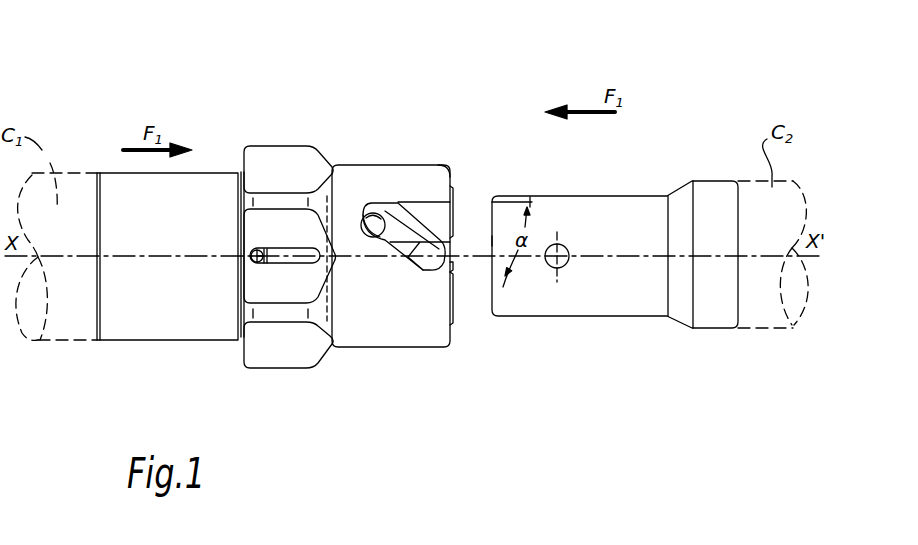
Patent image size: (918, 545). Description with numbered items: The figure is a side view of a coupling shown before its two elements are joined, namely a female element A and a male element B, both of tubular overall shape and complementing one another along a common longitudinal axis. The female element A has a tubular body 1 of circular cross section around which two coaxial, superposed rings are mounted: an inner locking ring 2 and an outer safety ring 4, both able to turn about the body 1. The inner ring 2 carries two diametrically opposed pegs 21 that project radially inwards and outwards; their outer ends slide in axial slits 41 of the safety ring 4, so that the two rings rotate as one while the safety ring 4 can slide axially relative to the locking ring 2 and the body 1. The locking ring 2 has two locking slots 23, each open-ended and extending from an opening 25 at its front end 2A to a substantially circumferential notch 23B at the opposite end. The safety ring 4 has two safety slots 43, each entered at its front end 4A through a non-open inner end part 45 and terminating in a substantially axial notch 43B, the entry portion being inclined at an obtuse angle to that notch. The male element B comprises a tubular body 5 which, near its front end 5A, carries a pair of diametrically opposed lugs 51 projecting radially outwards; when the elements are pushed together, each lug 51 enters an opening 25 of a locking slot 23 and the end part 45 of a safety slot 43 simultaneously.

The body 1 is at (144, 320).
The inner locking ring 2 is at (398, 215).
The front end of the locking ring 2A is at (462, 315).
The outer safety ring 4 is at (374, 353).
The front end of the safety ring 4A is at (456, 174).
The body 5 is at (596, 296).
The front end of the male body 5A is at (440, 233).
The peg 21 is at (251, 251).
The locking slot 23 is at (418, 222).
The circumferential notch 23B is at (364, 204).
The opening 25 is at (459, 239).
The axial slit 41 is at (298, 247).
The safety slot 43 is at (418, 277).
The axial notch 43B is at (363, 235).
The inner end part 45 is at (482, 242).
The lug 51 is at (569, 250).
The female element A is at (125, 127).
The male element B is at (720, 127).